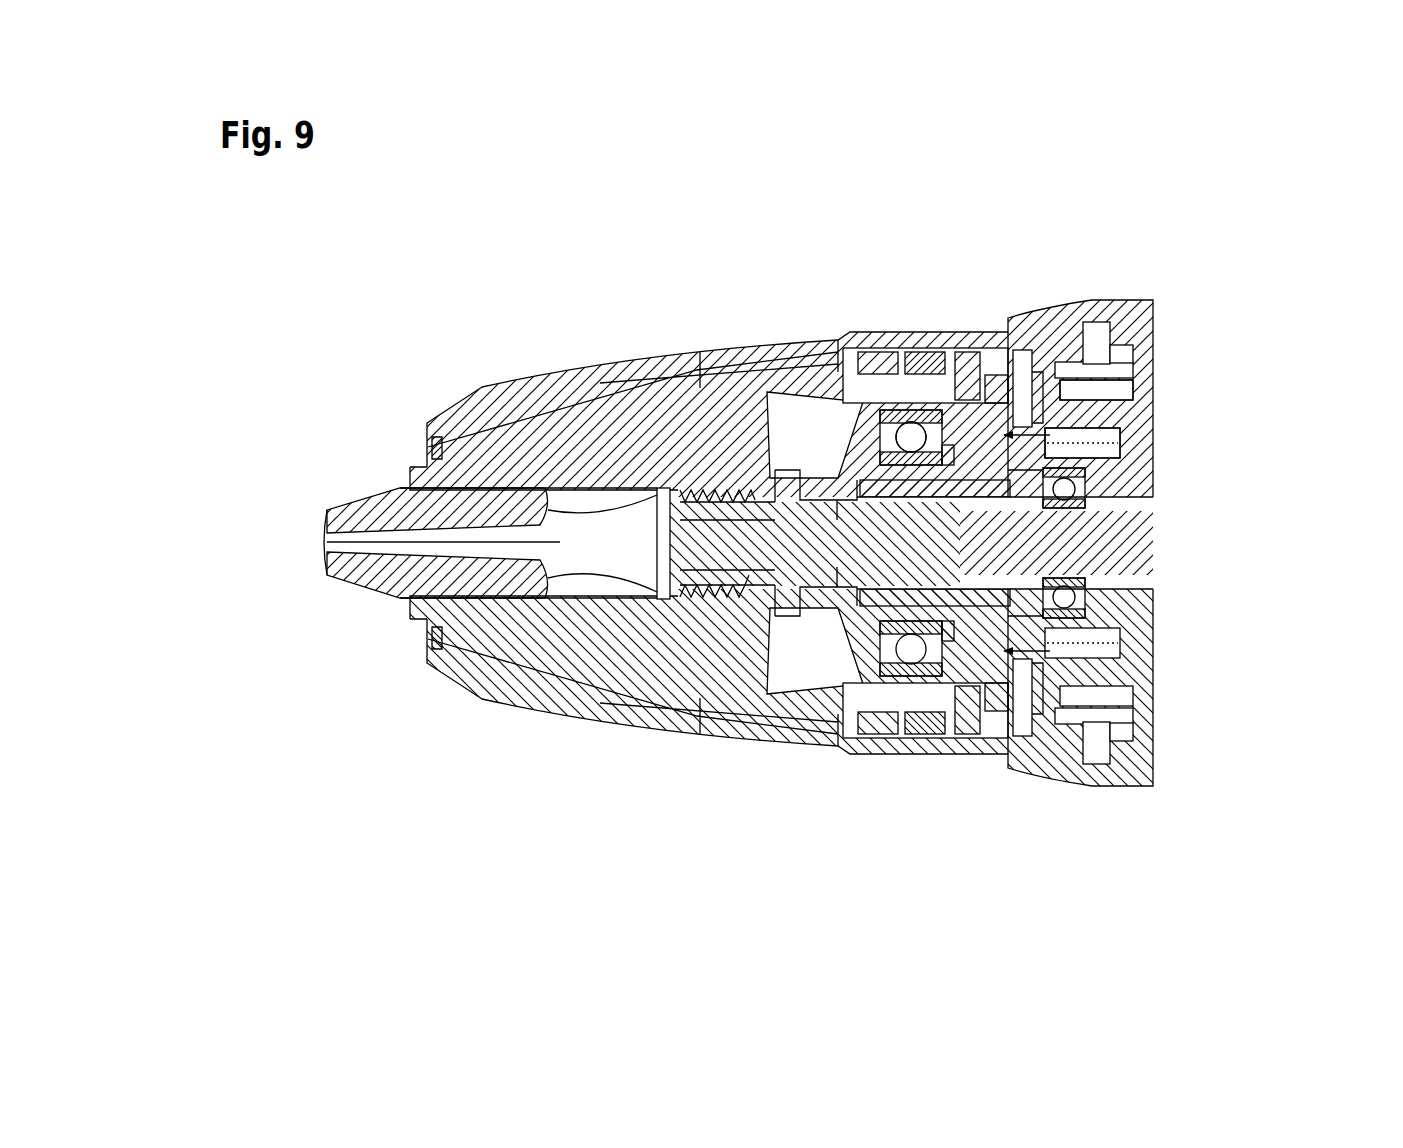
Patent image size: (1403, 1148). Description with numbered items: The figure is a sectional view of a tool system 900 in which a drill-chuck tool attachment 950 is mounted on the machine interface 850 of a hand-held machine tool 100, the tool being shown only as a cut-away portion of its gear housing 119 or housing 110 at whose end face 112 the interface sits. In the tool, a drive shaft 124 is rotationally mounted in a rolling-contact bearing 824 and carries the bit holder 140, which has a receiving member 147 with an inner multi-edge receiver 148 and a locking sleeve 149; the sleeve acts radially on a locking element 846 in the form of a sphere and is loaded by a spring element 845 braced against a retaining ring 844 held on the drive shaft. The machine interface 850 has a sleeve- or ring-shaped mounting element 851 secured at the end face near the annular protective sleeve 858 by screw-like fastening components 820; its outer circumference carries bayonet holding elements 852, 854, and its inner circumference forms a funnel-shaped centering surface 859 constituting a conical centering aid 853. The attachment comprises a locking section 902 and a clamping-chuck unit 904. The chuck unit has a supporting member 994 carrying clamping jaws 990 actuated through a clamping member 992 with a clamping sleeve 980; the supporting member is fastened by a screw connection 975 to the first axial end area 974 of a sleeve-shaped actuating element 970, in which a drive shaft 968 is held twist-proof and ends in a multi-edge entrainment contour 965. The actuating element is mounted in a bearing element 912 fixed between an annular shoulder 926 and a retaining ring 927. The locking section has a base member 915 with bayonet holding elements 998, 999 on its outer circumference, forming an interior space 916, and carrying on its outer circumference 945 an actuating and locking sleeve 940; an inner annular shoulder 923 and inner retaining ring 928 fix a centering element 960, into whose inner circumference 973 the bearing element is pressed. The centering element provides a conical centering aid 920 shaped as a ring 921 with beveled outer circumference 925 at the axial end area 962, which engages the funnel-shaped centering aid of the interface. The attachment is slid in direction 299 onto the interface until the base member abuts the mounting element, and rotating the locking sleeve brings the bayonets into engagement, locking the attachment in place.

The hand-held machine tool 100 is at (1148, 285).
The housing 110 is at (1110, 333).
The end face 112 is at (1020, 750).
The gear housing 119 is at (1128, 386).
The drive shaft 124 is at (1128, 572).
The bit holder 140 is at (852, 340).
The receiving member 147 is at (790, 486).
The inner multi-edge receiver 148 is at (790, 615).
The locking sleeve 149 is at (860, 465).
The direction 299 is at (1185, 845).
The fastening components 820 is at (1095, 452).
The rolling-contact bearing 824 is at (1075, 612).
The retaining ring 844 is at (1110, 485).
The spring element 845 is at (1110, 512).
The locking element 846 is at (850, 640).
The machine interface 850 is at (1100, 596).
The mounting element 851 is at (1090, 700).
The holding element 852 is at (1012, 380).
The centering aid 853 is at (1115, 735).
The holding element 854 is at (985, 710).
The protective sleeve 858 is at (1080, 790).
The centering surface 859 is at (925, 365).
The tool system 900 is at (427, 208).
The locking section 902 is at (996, 245).
The clamping-chuck unit 904 is at (603, 812).
The bearing element 912 is at (890, 360).
The base member 915 is at (965, 390).
The interior space 916 is at (1100, 498).
The centering aid 920 is at (1120, 545).
The ring 921 is at (1090, 655).
The inner annular shoulder 923 is at (950, 700).
The outer circumference 925 is at (1120, 398).
The annular shoulder 926 is at (845, 620).
The retaining ring 927 is at (1100, 468).
The inner retaining ring 928 is at (868, 610).
The actuating and locking sleeve 940 is at (930, 650).
The outer circumference 945 is at (978, 420).
The tool attachment 950 is at (628, 275).
The centering element 960 is at (915, 425).
The axial end area 962 is at (1085, 440).
The multi-edge entrainment contour 965 is at (820, 430).
The drive shaft 968 is at (700, 490).
The actuating element 970 is at (735, 605).
The inner circumference 973 is at (892, 640).
The first axial end area 974 is at (590, 672).
The screw connection 975 is at (655, 672).
The clamping sleeve 980 is at (493, 397).
The clamping jaws 990 is at (350, 556).
The clamping member 992 is at (505, 655).
The supporting member 994 is at (578, 450).
The holding element 998 is at (1000, 762).
The holding element 999 is at (1040, 400).